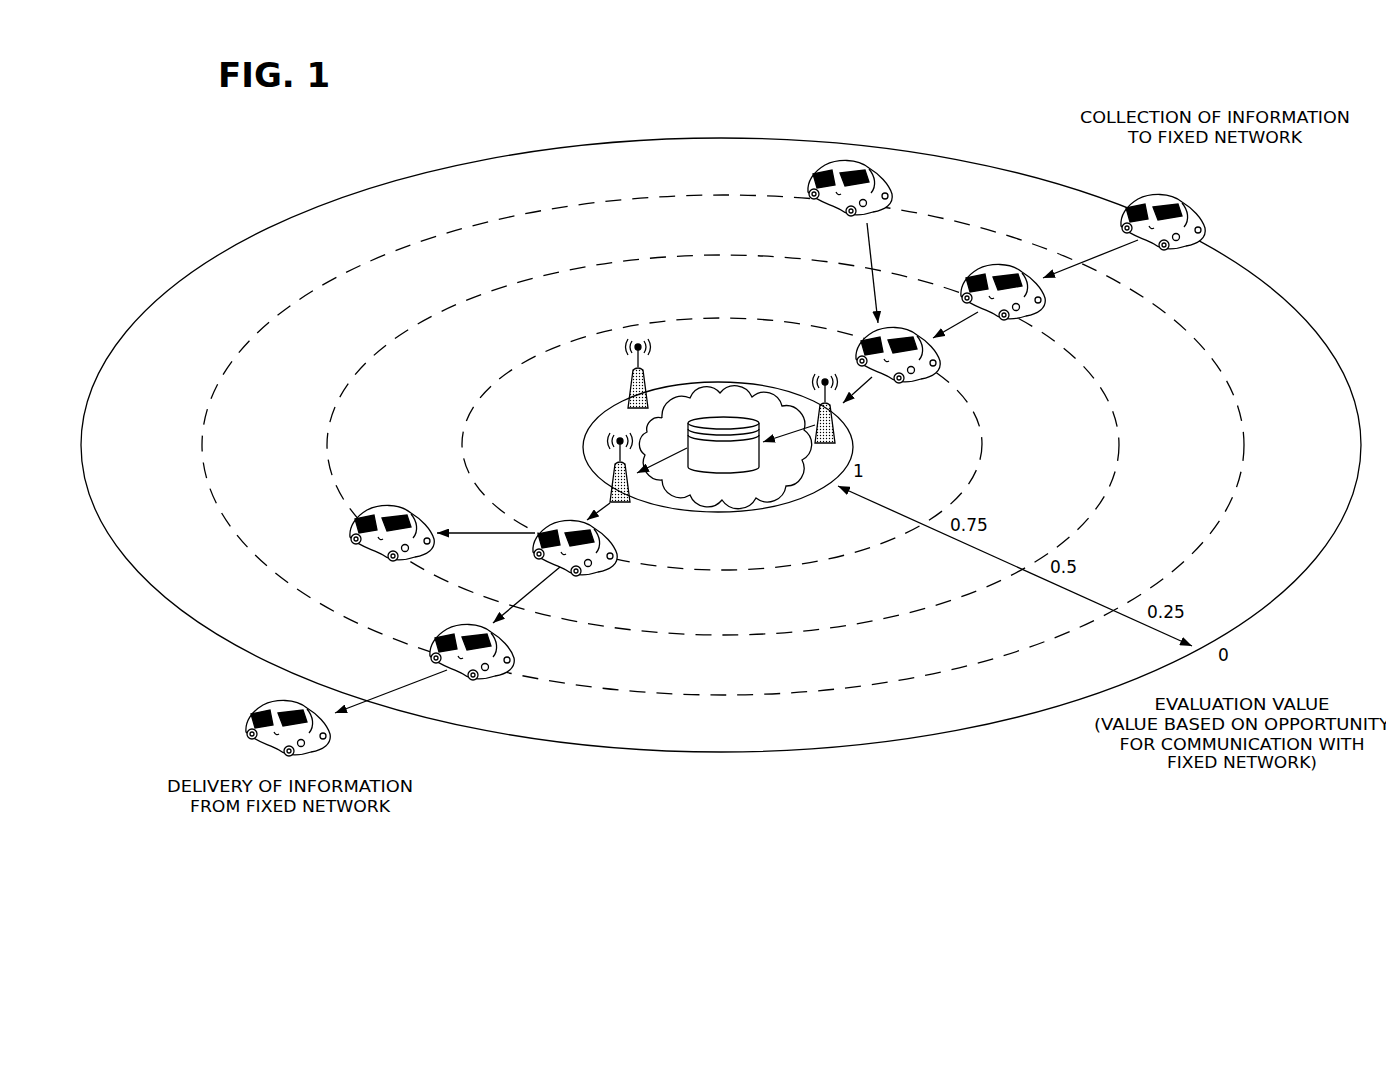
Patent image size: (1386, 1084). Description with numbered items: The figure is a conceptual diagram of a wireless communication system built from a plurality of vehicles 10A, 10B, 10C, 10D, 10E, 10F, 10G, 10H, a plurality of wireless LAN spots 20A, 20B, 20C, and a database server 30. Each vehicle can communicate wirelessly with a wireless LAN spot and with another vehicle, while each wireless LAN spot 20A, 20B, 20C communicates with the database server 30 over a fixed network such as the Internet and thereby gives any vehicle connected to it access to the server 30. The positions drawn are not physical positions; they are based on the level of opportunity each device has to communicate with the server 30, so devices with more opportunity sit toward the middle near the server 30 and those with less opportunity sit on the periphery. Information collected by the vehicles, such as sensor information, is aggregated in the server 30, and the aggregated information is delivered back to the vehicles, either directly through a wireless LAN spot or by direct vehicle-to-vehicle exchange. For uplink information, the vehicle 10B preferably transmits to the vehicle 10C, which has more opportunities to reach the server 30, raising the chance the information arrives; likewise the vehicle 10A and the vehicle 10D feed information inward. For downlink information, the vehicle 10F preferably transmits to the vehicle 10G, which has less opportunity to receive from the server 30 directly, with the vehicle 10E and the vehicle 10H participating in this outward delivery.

The vehicle 10A is at (1152, 208).
The vehicle 10B is at (1001, 279).
The vehicle 10C is at (883, 348).
The vehicle 10D is at (837, 182).
The vehicle 10E is at (575, 536).
The vehicle 10F is at (459, 641).
The vehicle 10G is at (278, 718).
The vehicle 10H is at (349, 506).
The wireless LAN spot 20A is at (810, 401).
The wireless LAN spot 20B is at (632, 477).
The wireless LAN spot 20C is at (657, 373).
The database server 30 is at (723, 436).